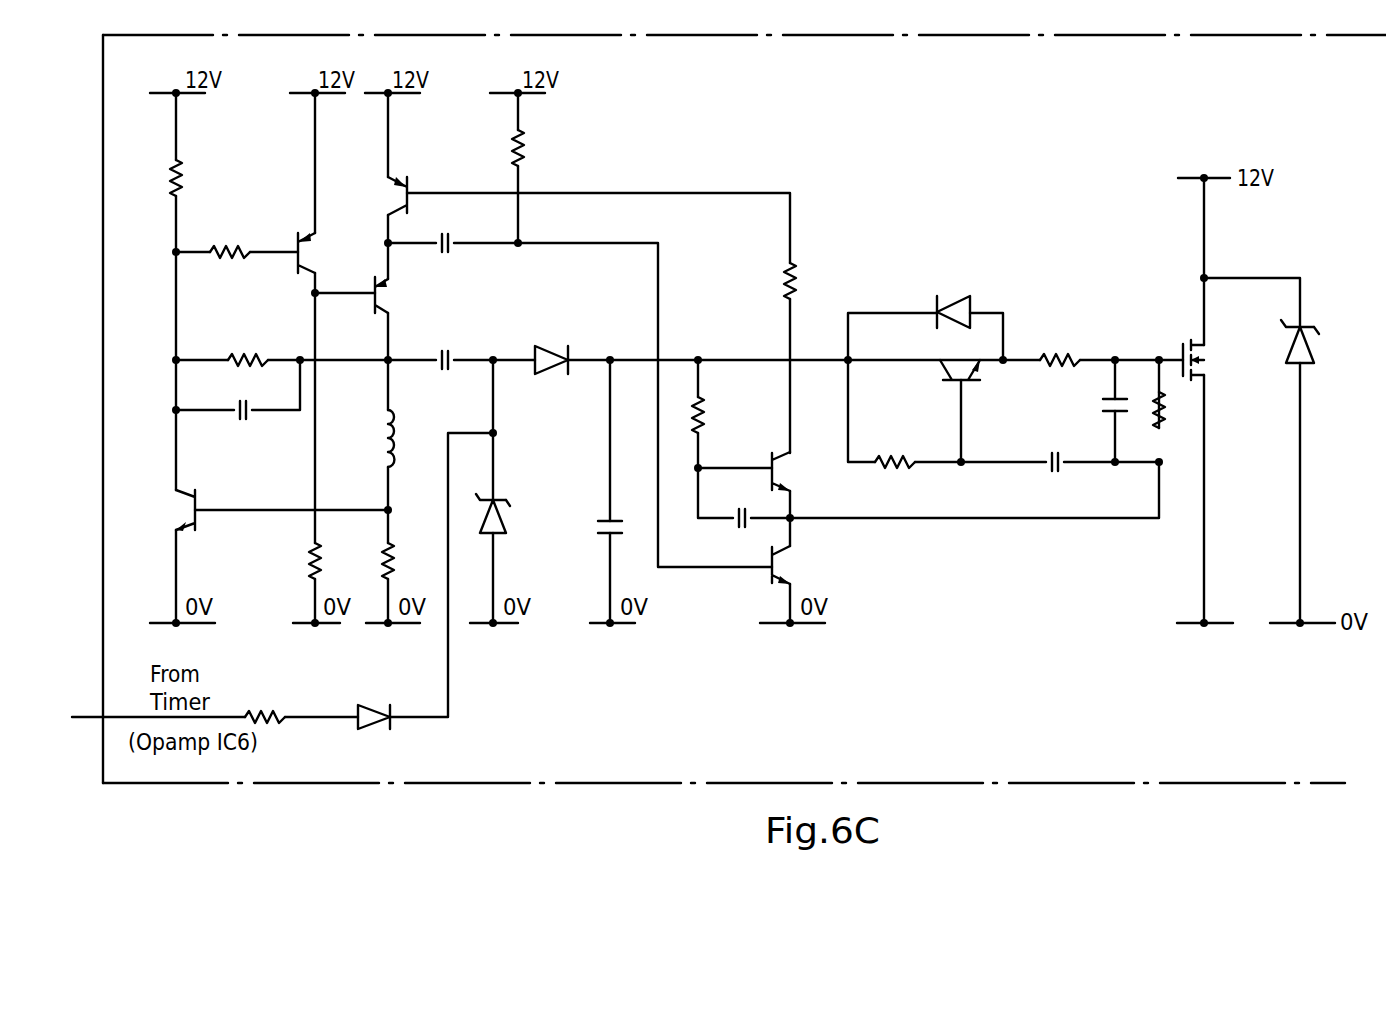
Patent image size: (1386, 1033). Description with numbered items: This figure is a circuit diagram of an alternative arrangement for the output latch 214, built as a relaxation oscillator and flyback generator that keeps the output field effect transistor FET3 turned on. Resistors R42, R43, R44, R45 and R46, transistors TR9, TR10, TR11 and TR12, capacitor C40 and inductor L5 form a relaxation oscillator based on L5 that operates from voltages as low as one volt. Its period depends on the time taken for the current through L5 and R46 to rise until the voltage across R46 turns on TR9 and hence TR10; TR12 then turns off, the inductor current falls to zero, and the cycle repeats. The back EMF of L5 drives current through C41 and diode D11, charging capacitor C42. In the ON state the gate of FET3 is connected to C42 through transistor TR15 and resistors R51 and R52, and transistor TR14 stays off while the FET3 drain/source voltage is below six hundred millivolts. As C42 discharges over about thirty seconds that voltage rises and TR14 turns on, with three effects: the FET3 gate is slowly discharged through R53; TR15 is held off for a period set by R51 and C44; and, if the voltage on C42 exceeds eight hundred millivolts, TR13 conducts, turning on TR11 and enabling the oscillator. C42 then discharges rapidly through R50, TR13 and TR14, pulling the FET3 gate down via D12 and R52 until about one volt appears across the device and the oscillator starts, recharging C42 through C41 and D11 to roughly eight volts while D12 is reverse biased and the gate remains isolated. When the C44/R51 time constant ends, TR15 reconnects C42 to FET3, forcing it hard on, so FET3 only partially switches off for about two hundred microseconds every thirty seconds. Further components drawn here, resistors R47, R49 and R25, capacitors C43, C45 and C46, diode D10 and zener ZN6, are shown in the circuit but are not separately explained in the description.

The output latch 214 is at (1232, 783).
The resistor R42 is at (200, 178).
The resistor R43 is at (227, 267).
The resistor R44 is at (248, 346).
The resistor R45 is at (293, 561).
The resistor R46 is at (367, 561).
The resistor R47 is at (541, 148).
The resistor R49 is at (766, 281).
The resistor R50 is at (723, 415).
The resistor R51 is at (896, 476).
The resistor R52 is at (1058, 347).
The resistor R53 is at (1168, 401).
The resistor R25 is at (264, 705).
The capacitor C40 is at (246, 424).
The capacitor C41 is at (449, 344).
The capacitor C42 is at (587, 527).
The capacitor C43 is at (739, 533).
The capacitor C44 is at (1056, 477).
The capacitor C45 is at (1092, 404).
The capacitor C46 is at (449, 261).
The transistor TR9 is at (200, 500).
The transistor TR10 is at (298, 240).
The transistor TR11 is at (407, 182).
The transistor TR12 is at (375, 300).
The transistor TR13 is at (772, 462).
The transistor TR14 is at (768, 575).
The transistor TR15 is at (956, 385).
The zener diode D10 is at (500, 505).
The diode D11 is at (562, 345).
The diode D12 is at (960, 300).
The inductor L5 is at (375, 438).
The output field effect transistor FET3 is at (1181, 345).
The zener diode ZN6 is at (1323, 341).